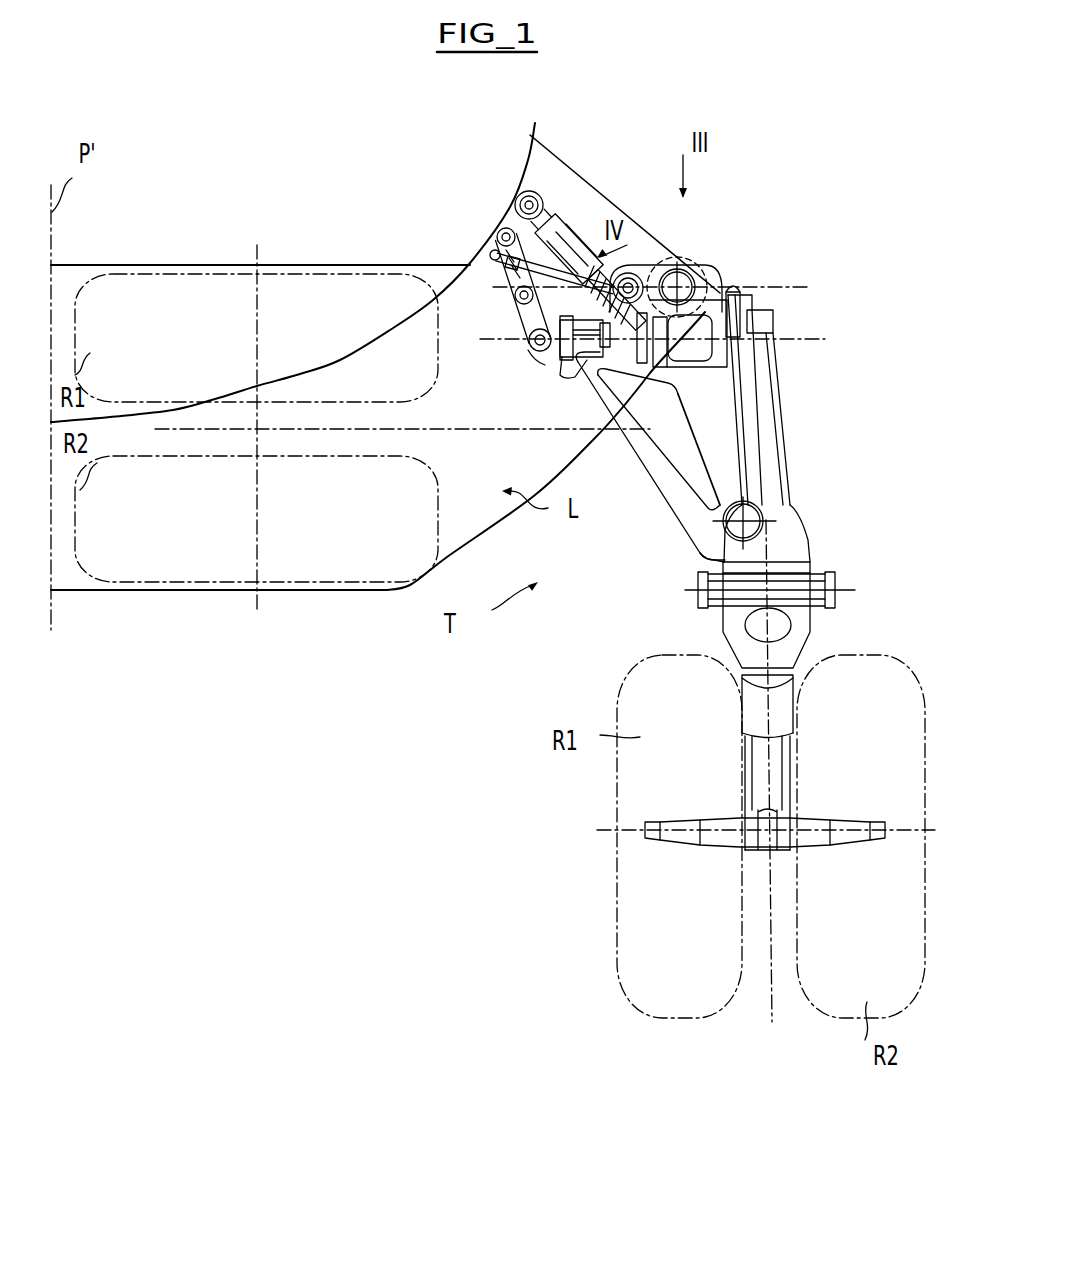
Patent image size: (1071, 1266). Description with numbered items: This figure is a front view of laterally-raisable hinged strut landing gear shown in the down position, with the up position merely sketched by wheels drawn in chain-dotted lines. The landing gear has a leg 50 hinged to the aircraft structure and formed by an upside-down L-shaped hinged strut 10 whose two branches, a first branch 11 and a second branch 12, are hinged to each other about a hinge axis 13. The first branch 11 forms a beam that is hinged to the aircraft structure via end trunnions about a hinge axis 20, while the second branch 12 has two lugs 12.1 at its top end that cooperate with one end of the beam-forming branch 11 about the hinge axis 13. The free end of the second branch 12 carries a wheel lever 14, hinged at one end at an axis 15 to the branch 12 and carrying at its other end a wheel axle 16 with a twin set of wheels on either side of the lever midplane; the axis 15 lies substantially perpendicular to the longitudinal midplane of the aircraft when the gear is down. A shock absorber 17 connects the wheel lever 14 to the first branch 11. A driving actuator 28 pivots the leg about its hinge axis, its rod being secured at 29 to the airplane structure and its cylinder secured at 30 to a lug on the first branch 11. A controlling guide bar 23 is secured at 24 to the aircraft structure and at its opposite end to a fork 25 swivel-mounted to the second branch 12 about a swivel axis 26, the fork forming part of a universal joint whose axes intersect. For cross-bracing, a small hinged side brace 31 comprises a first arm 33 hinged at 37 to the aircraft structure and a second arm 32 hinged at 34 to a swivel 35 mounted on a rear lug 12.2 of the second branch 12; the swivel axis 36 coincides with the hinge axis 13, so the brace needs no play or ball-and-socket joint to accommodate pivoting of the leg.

The hinged strut 10 is at (755, 380).
The first branch 11 is at (716, 290).
The second branch 12 is at (745, 455).
The lugs 12.1 is at (760, 326).
The rear lug 12.2 is at (576, 378).
The hinge axis 13 is at (812, 333).
The wheel lever 14 is at (785, 763).
The hinge axis of wheel lever 15 is at (808, 588).
The wheel axle 16 is at (685, 846).
The shock absorber 17 is at (777, 402).
The hinge axis of the leg 20 is at (646, 265).
The controlling guide bar 23 is at (568, 220).
The guide bar attachment point 24 is at (522, 200).
The fork 25 is at (770, 515).
The swivel axis of the fork 26 is at (710, 550).
The driving actuator 28 is at (590, 263).
The actuator rod attachment point 29 is at (490, 256).
The actuator cylinder attachment point 30 is at (668, 420).
The small hinged side brace 31 is at (450, 327).
The second arm 32 is at (527, 319).
The first arm 33 is at (512, 270).
The hinge of second arm 34 is at (520, 352).
The swivel 35 is at (552, 353).
The swivel axis 36 is at (498, 350).
The hinge of first arm 37 is at (497, 232).
The leg 50 is at (768, 288).